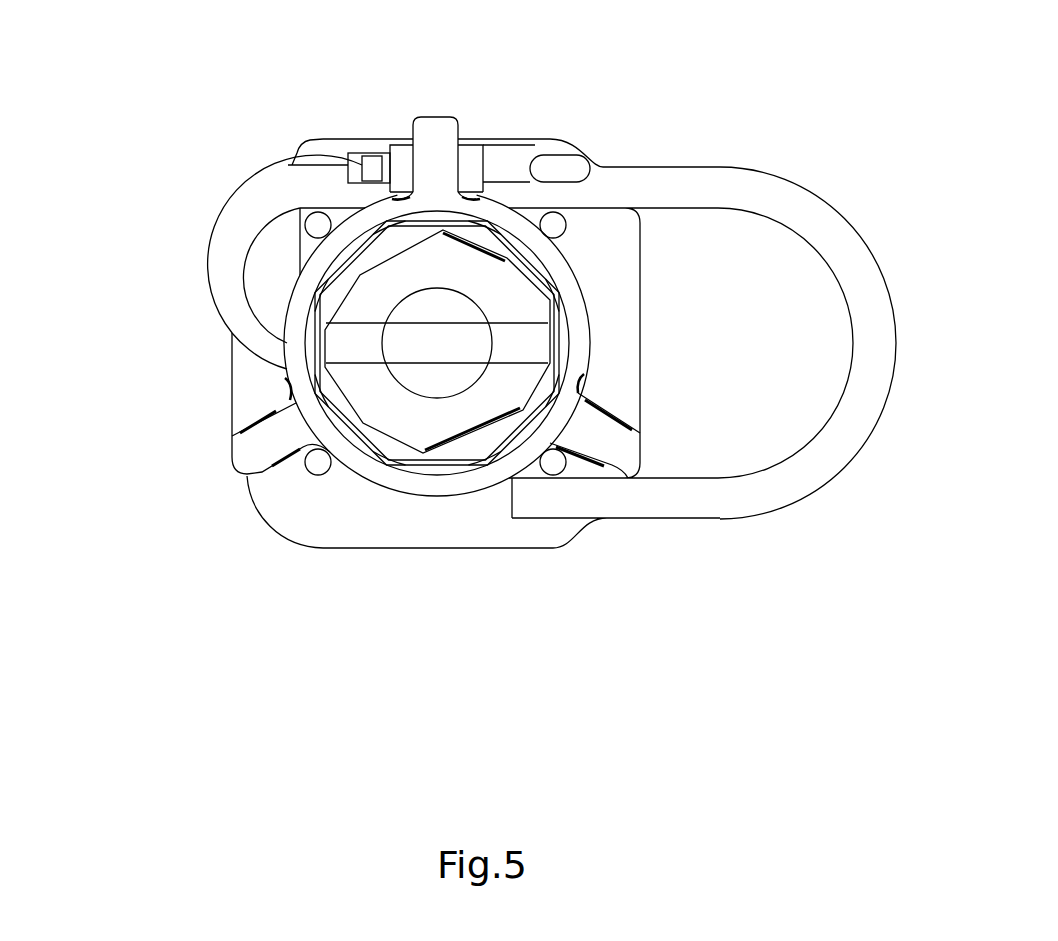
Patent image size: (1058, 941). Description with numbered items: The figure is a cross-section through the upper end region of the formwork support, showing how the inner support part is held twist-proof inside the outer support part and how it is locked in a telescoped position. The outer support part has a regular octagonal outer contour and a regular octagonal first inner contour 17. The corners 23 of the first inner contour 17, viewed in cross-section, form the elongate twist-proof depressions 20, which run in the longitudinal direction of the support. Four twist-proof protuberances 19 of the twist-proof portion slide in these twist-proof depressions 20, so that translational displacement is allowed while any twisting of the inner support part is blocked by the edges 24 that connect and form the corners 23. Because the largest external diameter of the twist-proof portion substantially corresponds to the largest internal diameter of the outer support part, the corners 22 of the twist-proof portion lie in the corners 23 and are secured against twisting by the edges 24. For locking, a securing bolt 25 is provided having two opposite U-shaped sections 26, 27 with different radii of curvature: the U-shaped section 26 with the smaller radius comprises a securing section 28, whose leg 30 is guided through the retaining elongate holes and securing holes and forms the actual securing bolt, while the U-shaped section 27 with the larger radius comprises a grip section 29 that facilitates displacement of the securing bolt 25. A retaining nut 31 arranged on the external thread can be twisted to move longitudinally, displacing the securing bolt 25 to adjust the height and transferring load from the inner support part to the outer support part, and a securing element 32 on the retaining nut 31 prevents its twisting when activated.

The first inner contour 17 is at (462, 460).
The twist-proof protuberances 19 is at (467, 227).
The twist-proof depressions 20 is at (487, 217).
The corners of the twist-proof portion 22 is at (325, 296).
The corners of the first inner contour 23 is at (388, 460).
The edges 24 is at (330, 414).
The securing bolt 25 is at (677, 185).
The U-shaped section 26 is at (230, 236).
The U-shaped section 27 is at (848, 267).
The securing section 28 is at (226, 283).
The grip section 29 is at (862, 363).
The leg 30 is at (410, 347).
The retaining nut 31 is at (577, 307).
The securing element 32 is at (512, 165).